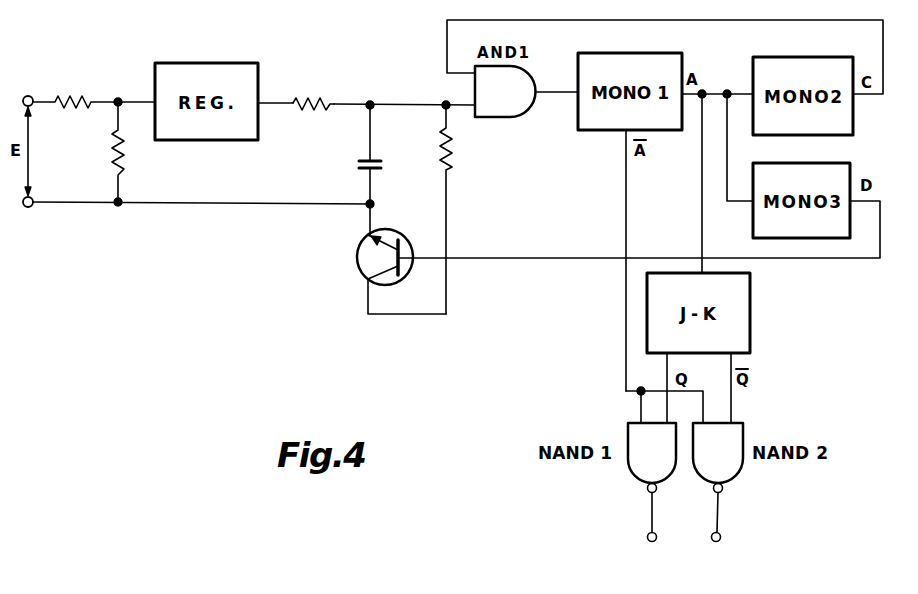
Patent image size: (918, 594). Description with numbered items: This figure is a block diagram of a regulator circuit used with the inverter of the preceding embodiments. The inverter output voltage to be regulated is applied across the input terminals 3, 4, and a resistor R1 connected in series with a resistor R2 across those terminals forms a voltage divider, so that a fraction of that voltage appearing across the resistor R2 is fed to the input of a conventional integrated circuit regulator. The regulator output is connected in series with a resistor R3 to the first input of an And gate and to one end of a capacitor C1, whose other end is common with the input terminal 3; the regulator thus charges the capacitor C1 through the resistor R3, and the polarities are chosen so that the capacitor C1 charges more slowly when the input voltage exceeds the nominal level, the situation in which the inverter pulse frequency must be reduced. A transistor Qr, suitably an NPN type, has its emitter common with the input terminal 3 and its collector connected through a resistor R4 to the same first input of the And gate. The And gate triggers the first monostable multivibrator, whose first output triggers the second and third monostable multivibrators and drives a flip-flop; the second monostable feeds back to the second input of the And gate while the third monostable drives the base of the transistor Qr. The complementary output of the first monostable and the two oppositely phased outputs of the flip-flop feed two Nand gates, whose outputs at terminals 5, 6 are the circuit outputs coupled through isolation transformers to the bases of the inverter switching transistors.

The input terminal 3 is at (24, 208).
The input terminal 4 is at (24, 96).
The output terminal 5 is at (649, 541).
The output terminal 6 is at (719, 541).
The resistor R1 is at (77, 99).
The resistor R2 is at (125, 156).
The resistor R3 is at (317, 99).
The resistor R4 is at (453, 150).
The capacitor C1 is at (384, 166).
The transistor Qr is at (356, 249).